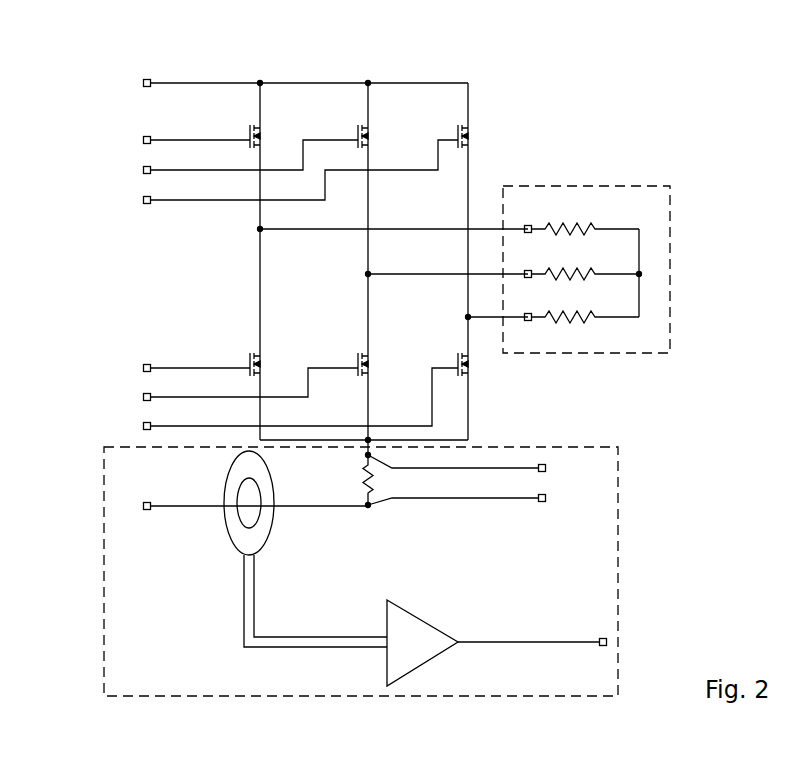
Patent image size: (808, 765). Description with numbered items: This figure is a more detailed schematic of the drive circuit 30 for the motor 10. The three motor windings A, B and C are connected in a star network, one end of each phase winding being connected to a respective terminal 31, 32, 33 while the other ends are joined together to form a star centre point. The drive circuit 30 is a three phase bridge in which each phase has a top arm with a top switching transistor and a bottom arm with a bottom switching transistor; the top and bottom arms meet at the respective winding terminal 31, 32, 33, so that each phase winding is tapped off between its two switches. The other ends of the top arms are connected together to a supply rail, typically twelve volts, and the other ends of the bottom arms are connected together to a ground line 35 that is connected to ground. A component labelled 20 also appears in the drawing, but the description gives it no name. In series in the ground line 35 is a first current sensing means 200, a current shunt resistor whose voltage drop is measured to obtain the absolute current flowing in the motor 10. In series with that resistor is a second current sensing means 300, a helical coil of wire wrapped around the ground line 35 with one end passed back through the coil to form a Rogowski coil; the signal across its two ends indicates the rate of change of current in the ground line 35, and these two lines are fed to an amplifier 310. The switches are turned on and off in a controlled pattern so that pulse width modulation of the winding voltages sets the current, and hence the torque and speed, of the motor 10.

The motor drive circuit 30 is at (533, 108).
The motor 10 is at (620, 186).
The terminal 31 is at (260, 229).
The terminal 32 is at (368, 275).
The terminal 33 is at (468, 317).
The current sensing circuit 20 is at (618, 522).
The ground line 35 is at (172, 507).
The second current sensing means 300 is at (237, 553).
The first current sensing means 200 is at (366, 496).
The amplifier 310 is at (405, 655).